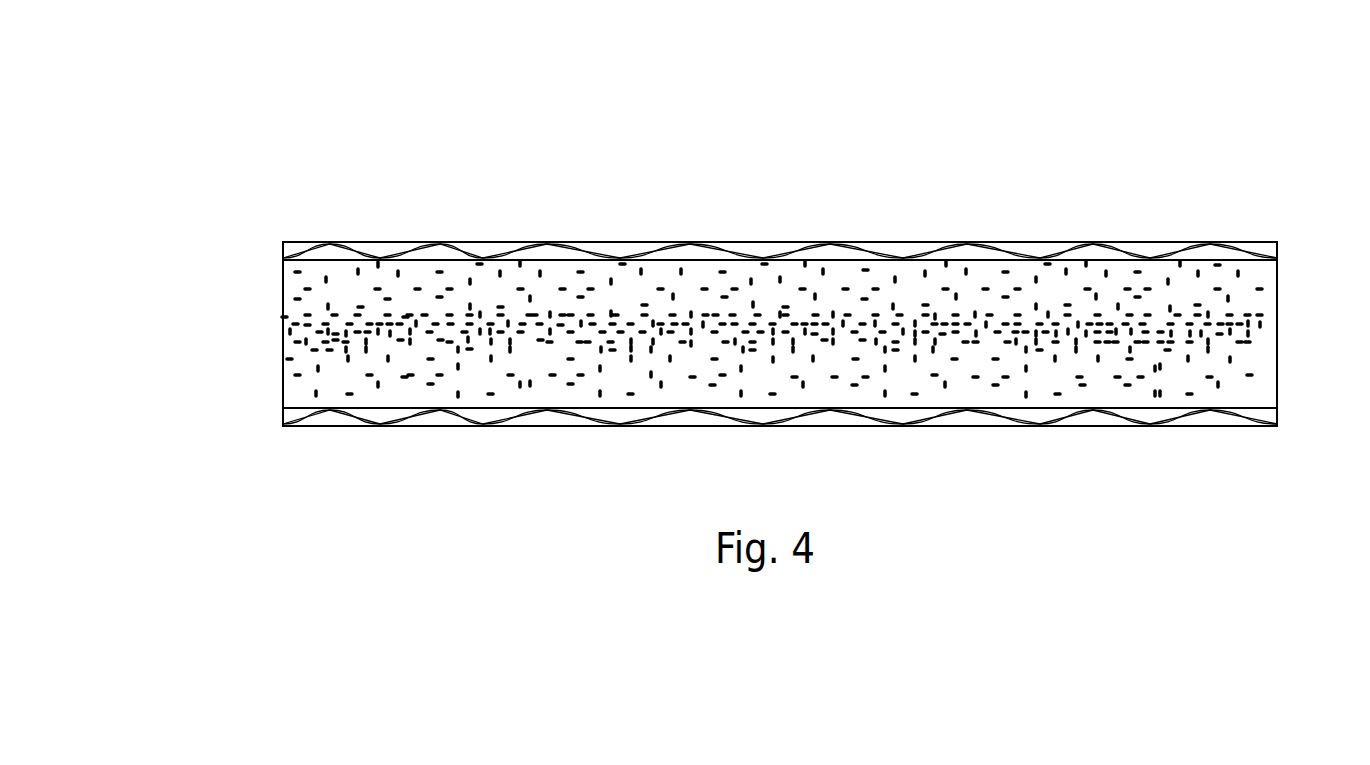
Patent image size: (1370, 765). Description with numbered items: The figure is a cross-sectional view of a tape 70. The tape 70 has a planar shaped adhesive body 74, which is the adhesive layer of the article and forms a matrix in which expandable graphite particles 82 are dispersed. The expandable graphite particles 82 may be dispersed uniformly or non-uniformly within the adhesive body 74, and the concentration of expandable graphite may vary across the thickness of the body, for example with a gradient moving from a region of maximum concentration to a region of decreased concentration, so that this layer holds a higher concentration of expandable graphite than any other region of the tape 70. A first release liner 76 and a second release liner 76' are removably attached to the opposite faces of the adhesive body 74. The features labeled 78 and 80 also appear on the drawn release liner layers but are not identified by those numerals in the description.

The tape 70 is at (487, 198).
The planar shaped adhesive body 74 is at (283, 322).
The first release liner 76 is at (728, 463).
The second release liner 76' is at (764, 269).
The fibers of first outer layer 78 is at (1043, 408).
The fibers of second outer layer 80 is at (1188, 262).
The expandable graphite particles 82 is at (1220, 387).